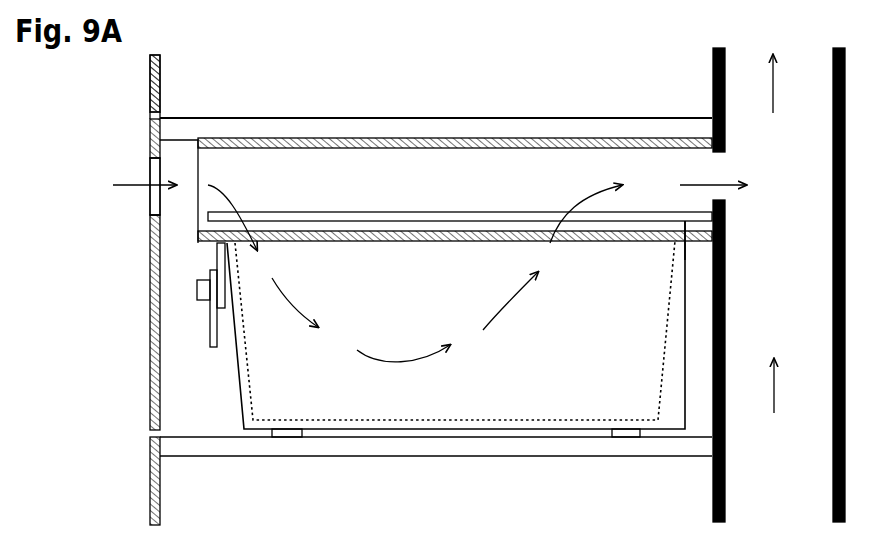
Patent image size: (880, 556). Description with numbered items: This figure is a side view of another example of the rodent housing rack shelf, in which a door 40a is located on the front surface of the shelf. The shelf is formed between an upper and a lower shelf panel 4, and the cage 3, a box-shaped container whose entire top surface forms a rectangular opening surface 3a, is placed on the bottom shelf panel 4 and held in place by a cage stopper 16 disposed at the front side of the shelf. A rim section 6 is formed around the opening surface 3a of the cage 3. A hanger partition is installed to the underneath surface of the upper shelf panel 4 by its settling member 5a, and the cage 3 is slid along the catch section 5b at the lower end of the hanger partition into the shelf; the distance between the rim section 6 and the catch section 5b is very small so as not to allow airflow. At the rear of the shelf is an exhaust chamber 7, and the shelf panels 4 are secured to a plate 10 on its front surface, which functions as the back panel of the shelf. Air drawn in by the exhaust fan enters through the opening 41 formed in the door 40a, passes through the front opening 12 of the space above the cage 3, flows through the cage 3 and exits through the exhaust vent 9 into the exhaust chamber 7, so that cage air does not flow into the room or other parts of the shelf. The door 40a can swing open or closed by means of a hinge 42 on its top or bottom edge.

The cage 3 is at (243, 382).
The opening surface 3a is at (655, 211).
The shelf panel 4 is at (316, 118).
The settling member 5a is at (484, 138).
The catch section 5b is at (383, 241).
The rim section 6 is at (530, 213).
The exhaust chamber 7 is at (768, 314).
The exhaust vent 9 is at (727, 172).
The plate 10 is at (725, 125).
The front opening 12 is at (212, 165).
The cage stopper 16 is at (213, 331).
The door 40a is at (151, 362).
The opening 41 is at (150, 175).
The hinge 42 is at (150, 123).